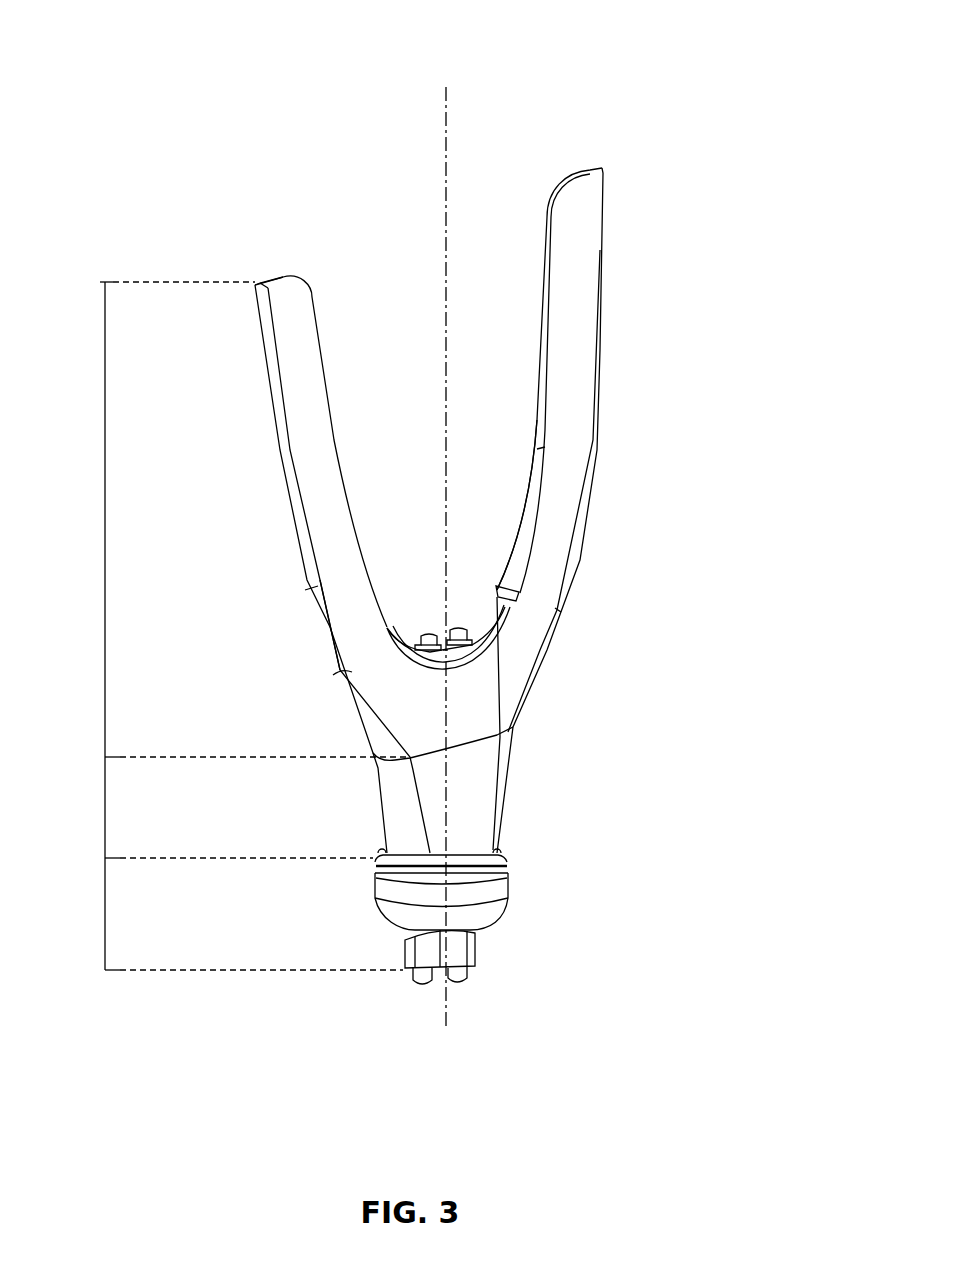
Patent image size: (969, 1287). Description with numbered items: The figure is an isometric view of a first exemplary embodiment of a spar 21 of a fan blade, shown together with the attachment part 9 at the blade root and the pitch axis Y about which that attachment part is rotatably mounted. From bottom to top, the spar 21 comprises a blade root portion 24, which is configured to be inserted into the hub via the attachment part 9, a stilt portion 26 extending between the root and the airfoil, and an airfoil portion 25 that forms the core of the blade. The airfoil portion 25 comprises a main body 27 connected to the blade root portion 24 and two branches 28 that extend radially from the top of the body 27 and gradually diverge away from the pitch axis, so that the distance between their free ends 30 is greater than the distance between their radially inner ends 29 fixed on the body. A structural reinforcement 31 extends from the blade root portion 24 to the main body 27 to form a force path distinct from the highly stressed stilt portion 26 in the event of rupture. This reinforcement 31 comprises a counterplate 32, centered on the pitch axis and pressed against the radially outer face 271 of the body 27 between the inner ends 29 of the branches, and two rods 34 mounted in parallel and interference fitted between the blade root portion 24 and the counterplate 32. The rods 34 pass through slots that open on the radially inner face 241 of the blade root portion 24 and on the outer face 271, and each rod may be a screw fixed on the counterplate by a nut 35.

The spar 21 is at (518, 103).
The attachment part 9 is at (487, 892).
The blade root portion 24 is at (105, 915).
The airfoil portion 25 is at (105, 520).
The stilt portion 26 is at (105, 808).
The main body 27 is at (481, 715).
The radially outer face 271 is at (503, 640).
The branches 28 is at (260, 415).
The radially inner end 29 is at (367, 658).
The free end 30 is at (275, 283).
The structural reinforcement 31 is at (446, 565).
The counterplate 32 is at (403, 622).
The rod 34 is at (430, 628).
The nut 35 is at (425, 975).
The radially inner face 241 is at (445, 977).